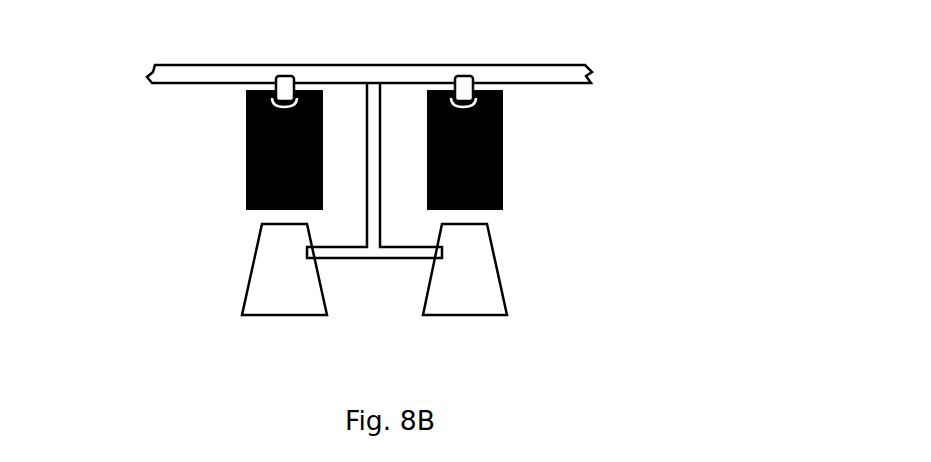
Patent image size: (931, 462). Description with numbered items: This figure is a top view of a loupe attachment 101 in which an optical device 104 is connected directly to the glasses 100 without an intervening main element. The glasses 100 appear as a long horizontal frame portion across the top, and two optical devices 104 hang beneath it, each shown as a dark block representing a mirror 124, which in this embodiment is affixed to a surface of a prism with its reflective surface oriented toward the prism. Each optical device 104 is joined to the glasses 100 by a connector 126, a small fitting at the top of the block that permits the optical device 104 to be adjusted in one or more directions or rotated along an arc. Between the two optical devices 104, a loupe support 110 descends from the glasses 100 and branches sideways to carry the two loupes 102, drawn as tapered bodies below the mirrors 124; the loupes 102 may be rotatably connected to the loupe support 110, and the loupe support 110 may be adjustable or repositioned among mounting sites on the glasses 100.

The glasses 100 is at (192, 69).
The loupe attachment 101 is at (188, 213).
The loupes 102 is at (480, 287).
The optical device 104 is at (525, 160).
The loupe support 110 is at (343, 253).
The mirror 124 is at (507, 188).
The connector 126 is at (270, 88).